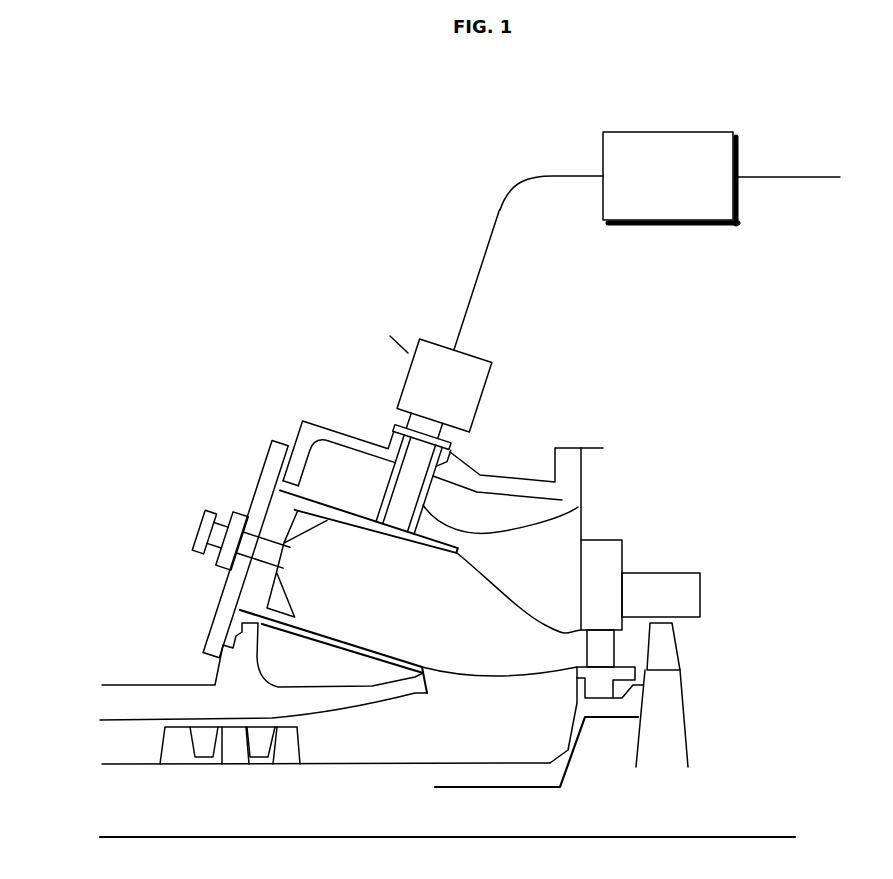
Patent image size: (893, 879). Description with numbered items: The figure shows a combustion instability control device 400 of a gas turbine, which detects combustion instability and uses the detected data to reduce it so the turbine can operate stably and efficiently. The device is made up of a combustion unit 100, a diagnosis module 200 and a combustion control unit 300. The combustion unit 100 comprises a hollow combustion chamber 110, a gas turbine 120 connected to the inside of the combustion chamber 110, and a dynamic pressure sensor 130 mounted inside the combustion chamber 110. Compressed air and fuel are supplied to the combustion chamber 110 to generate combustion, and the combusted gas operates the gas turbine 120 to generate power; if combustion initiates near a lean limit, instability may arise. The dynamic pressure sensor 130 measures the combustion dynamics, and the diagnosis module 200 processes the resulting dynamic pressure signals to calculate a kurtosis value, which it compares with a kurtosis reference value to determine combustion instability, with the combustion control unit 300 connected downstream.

The combustion unit 100 is at (160, 532).
The combustion chamber 110 is at (483, 663).
The gas turbine 120 is at (708, 657).
The dynamic pressure sensor 130 is at (425, 506).
The diagnosis module 200 is at (488, 389).
The combustion control unit 300 is at (683, 225).
The combustion instability control device 400 is at (242, 357).